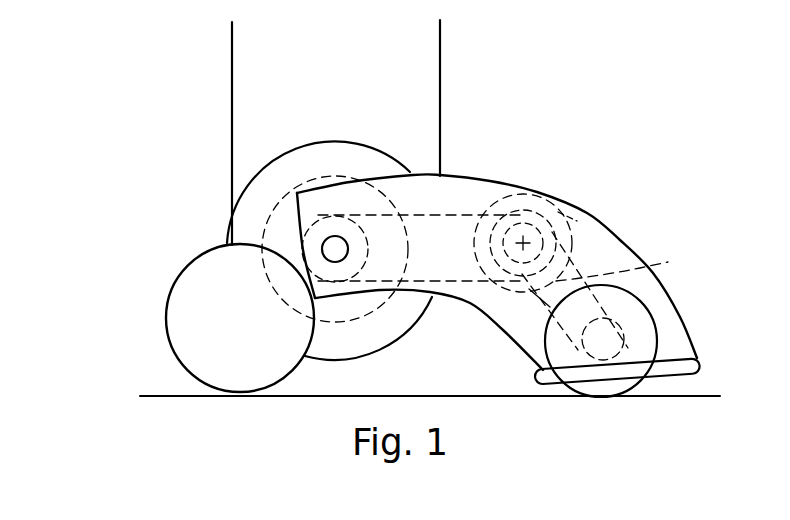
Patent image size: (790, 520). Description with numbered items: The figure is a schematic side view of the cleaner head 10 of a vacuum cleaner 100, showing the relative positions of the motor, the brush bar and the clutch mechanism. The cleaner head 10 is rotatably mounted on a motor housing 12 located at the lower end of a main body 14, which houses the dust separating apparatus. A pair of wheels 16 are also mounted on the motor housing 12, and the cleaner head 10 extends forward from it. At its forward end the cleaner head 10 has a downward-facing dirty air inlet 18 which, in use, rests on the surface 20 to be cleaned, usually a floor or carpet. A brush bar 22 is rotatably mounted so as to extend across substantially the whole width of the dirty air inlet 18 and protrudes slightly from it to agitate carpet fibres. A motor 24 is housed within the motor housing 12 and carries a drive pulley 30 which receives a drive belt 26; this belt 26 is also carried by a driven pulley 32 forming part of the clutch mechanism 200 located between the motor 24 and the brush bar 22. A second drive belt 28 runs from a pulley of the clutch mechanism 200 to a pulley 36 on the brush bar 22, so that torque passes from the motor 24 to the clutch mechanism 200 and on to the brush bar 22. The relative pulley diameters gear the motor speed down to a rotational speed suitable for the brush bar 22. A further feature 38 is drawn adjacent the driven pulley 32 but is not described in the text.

The vacuum cleaner 100 is at (467, 73).
The cleaner head 10 is at (603, 252).
The motor housing 12 is at (242, 227).
The main body 14 is at (246, 105).
The wheels 16 is at (181, 340).
The dirty air inlet 18 is at (680, 385).
The surface 20 is at (473, 395).
The brush bar 22 is at (640, 329).
The motor 24 is at (367, 313).
The drive belt 26 is at (448, 212).
The drive belt 28 is at (658, 265).
The drive pulley 30 is at (350, 214).
The driven pulley 32 is at (527, 205).
The pulley 36 is at (651, 308).
The pulley flange 38 is at (481, 234).
The clutch mechanism 200 is at (574, 219).